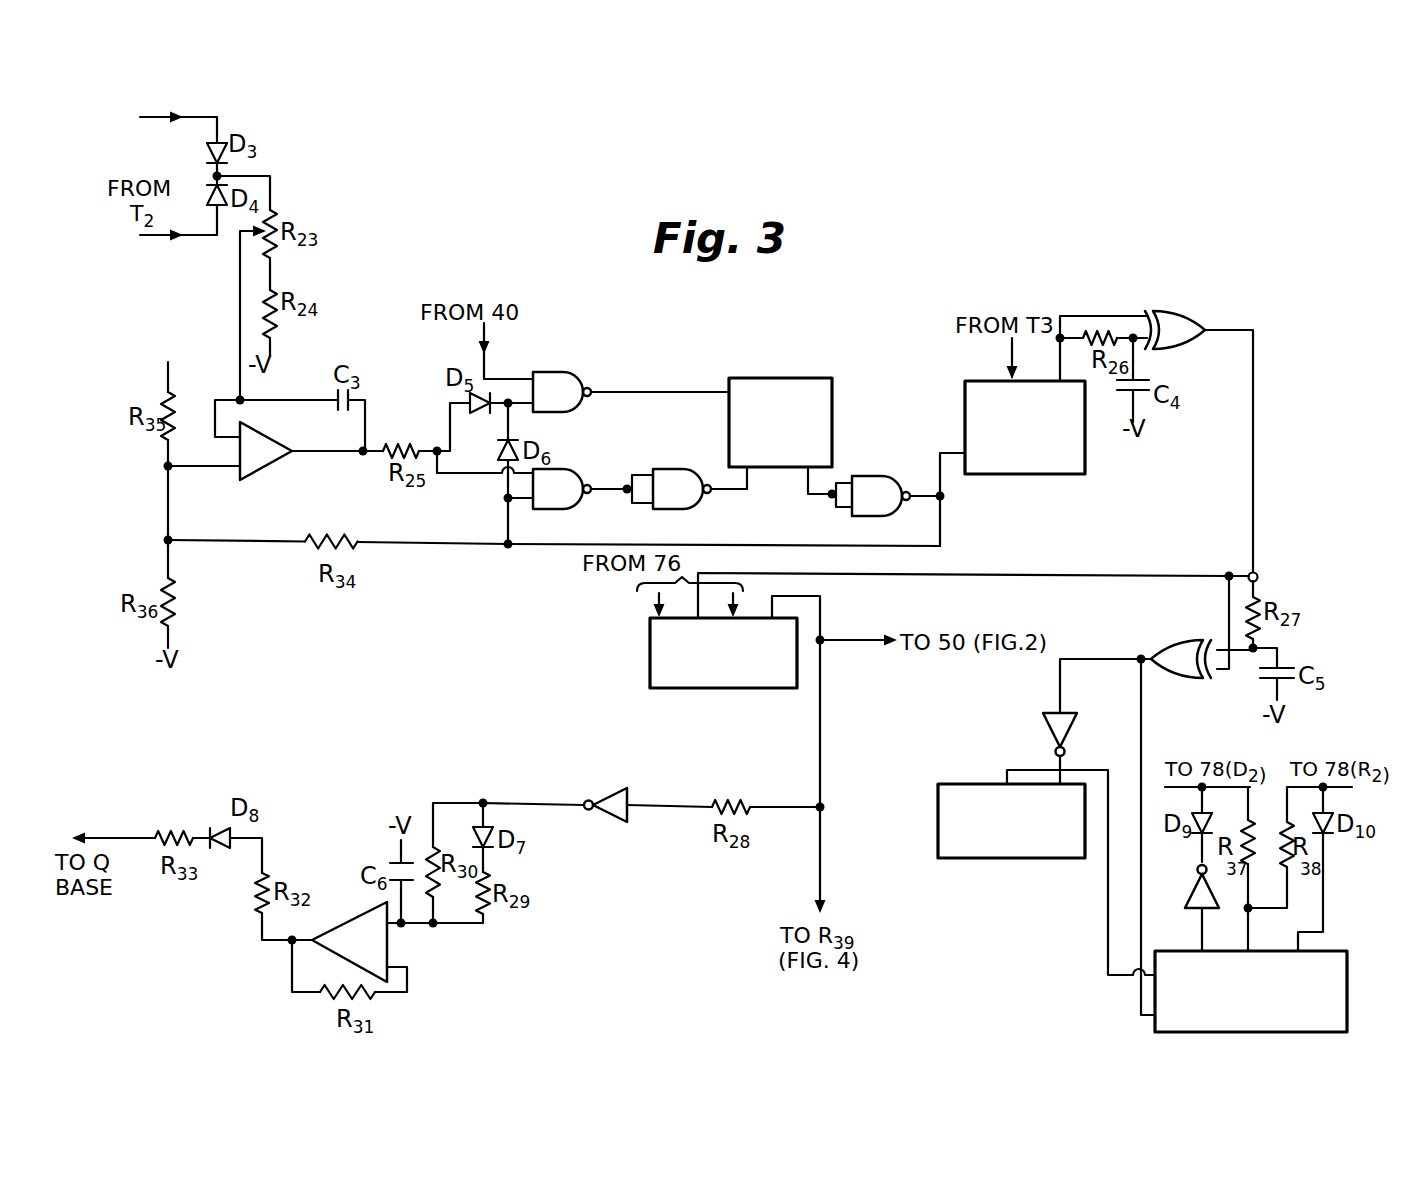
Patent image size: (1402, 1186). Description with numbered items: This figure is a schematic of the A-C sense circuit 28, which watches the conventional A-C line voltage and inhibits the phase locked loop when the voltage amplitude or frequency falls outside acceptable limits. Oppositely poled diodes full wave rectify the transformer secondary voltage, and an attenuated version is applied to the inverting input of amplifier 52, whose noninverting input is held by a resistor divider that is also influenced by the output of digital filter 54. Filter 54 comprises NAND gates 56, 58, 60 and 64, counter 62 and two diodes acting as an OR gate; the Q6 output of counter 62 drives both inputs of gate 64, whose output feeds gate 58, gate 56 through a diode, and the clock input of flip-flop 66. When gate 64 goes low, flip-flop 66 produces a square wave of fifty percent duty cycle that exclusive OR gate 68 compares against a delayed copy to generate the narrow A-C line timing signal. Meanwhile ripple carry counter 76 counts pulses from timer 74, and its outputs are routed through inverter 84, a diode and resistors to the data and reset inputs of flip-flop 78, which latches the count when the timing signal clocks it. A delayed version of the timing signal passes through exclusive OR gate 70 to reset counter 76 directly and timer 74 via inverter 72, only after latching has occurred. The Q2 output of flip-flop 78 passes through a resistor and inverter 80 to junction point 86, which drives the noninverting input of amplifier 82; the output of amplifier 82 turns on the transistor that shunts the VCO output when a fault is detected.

The A-C sense circuit 28 is at (463, 638).
The amplifier 52 is at (270, 472).
The digital filter 54 is at (640, 436).
The NAND gate 56 is at (566, 372).
The NAND gate 58 is at (565, 509).
The NAND gate 60 is at (690, 509).
The counter 62 is at (783, 378).
The NAND gate 64 is at (885, 516).
The flip-flop 66 is at (1012, 474).
The exclusive OR gate 68 is at (1188, 312).
The exclusive OR gate 70 is at (1185, 678).
The inverter 72 is at (1043, 729).
The timer 74 is at (995, 858).
The ripple carry counter 76 is at (1158, 1030).
The flip-flop 78 is at (688, 688).
The inverter 80 is at (615, 822).
The amplifier 82 is at (330, 927).
The inverter 84 is at (1184, 893).
The junction point 86 is at (483, 803).